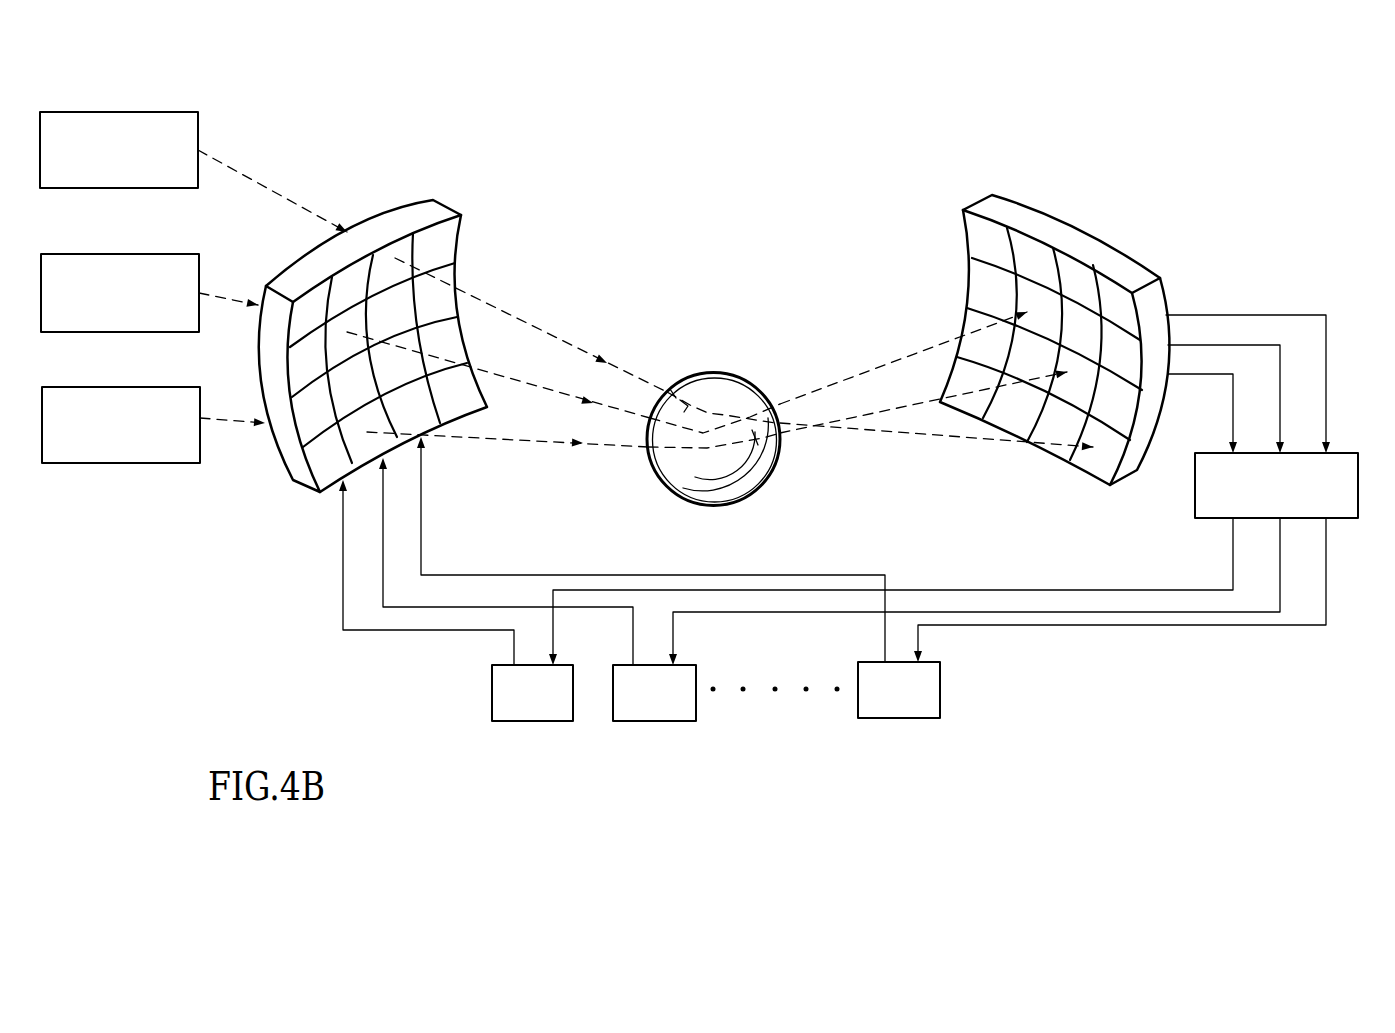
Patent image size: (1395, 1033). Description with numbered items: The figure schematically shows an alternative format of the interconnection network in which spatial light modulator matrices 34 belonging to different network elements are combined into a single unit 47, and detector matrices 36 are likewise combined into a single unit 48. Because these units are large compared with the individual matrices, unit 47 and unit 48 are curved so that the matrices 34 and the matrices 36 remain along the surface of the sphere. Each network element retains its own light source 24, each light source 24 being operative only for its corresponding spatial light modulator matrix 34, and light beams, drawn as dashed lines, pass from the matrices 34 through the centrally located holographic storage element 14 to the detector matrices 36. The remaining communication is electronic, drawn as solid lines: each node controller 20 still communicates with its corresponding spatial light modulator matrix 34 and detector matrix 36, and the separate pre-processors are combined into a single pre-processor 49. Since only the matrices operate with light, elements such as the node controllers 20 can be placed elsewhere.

The holographic storage element 14 is at (707, 380).
The node controller 20 is at (492, 672).
The light source 24 is at (120, 112).
The spatial light modulator matrix 34 is at (455, 337).
The detector matrix 36 is at (970, 323).
The single unit 47 is at (395, 317).
The single unit 48 is at (1025, 316).
The single pre-processor 49 is at (1360, 480).